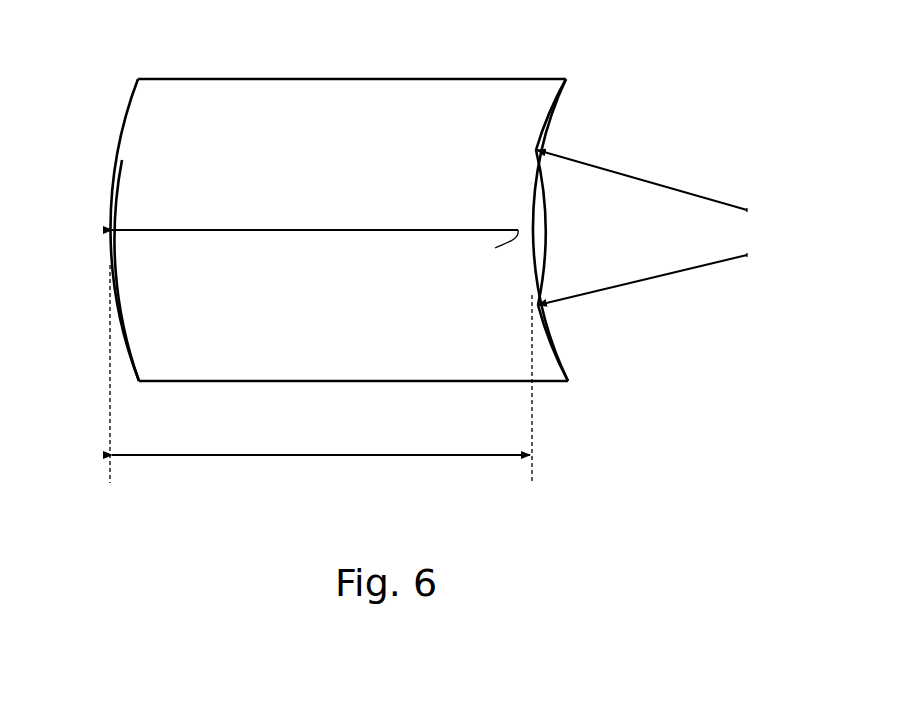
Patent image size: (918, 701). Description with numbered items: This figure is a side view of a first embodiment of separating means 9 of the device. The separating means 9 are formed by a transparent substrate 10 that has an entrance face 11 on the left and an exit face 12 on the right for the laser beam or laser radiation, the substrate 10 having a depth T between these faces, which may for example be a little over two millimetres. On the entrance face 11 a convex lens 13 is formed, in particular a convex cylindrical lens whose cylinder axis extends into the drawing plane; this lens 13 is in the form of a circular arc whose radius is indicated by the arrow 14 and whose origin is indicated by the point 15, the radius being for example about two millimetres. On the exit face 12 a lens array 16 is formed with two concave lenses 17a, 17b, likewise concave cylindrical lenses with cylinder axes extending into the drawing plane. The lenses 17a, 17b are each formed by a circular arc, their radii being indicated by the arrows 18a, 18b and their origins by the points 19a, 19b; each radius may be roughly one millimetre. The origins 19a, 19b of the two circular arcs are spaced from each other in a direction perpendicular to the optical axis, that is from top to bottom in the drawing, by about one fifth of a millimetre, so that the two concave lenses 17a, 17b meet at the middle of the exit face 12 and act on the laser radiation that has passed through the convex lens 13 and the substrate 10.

The separating means 9 is at (326, 52).
The transparent substrate 10 is at (320, 336).
The entrance face 11 is at (126, 85).
The exit face 12 is at (572, 376).
The convex lens 13 is at (128, 353).
The arrow 14 is at (143, 230).
The point 15 is at (495, 248).
The lens array 16 is at (508, 132).
The concave lens 17a is at (548, 338).
The concave lens 17b is at (556, 107).
The arrow 18a is at (590, 292).
The arrow 18b is at (638, 174).
The point 19a is at (747, 255).
The point 19b is at (747, 210).
The depth T is at (330, 455).